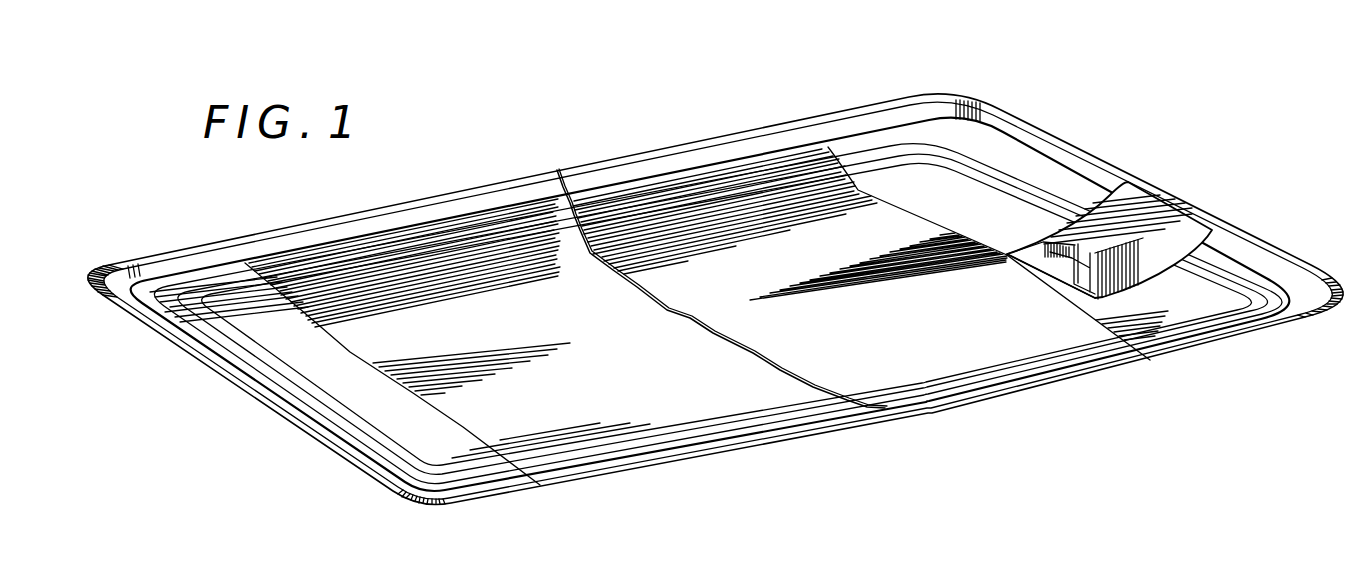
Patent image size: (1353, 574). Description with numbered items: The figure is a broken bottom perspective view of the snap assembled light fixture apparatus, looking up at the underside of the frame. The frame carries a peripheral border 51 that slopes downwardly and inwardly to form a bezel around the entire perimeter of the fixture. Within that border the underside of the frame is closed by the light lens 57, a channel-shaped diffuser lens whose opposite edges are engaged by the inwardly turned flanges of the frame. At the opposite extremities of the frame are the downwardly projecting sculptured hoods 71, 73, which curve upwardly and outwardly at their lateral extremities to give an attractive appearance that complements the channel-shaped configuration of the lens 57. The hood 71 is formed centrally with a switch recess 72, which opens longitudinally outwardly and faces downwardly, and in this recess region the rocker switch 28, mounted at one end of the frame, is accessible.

The peripheral border 51 is at (726, 136).
The light lens 57 is at (723, 397).
The sculptured hood 71 is at (1114, 318).
The switch recess 72 is at (1108, 218).
The sculptured hood 73 is at (465, 428).
The rocker switch 28 is at (1069, 260).